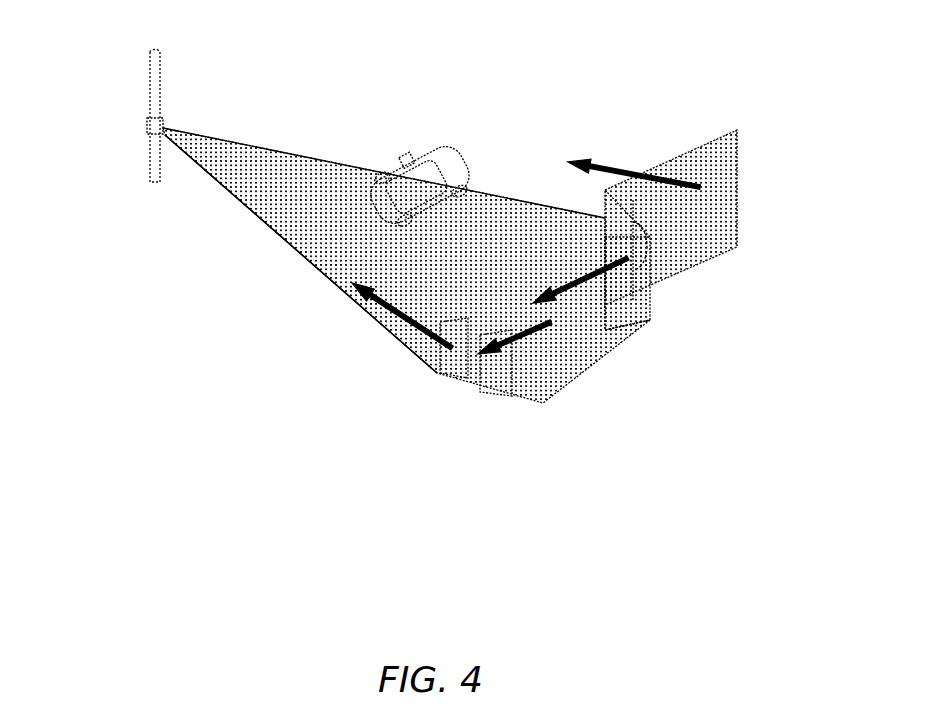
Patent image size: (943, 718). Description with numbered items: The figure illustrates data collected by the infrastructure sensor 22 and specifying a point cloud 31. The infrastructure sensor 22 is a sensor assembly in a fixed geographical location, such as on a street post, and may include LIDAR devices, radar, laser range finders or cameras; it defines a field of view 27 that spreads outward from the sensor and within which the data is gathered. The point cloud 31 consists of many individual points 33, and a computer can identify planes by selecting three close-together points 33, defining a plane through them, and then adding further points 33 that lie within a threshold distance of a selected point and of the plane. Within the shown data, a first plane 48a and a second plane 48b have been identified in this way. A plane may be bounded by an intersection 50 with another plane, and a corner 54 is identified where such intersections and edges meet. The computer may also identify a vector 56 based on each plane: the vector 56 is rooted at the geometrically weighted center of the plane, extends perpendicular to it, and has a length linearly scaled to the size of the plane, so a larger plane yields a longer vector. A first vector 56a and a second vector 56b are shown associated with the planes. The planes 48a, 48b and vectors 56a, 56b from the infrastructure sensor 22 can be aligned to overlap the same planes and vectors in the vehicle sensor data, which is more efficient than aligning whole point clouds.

The infrastructure sensor 22 is at (150, 57).
The field of view 27 is at (273, 153).
The point cloud 31 is at (258, 237).
The points 33 is at (323, 252).
The first plane 48a is at (738, 183).
The second plane 48b is at (648, 257).
The intersection 50 is at (600, 237).
The corner 54 is at (603, 190).
The vector 56 is at (403, 323).
The first vector 56a is at (610, 163).
The second vector 56b is at (570, 293).